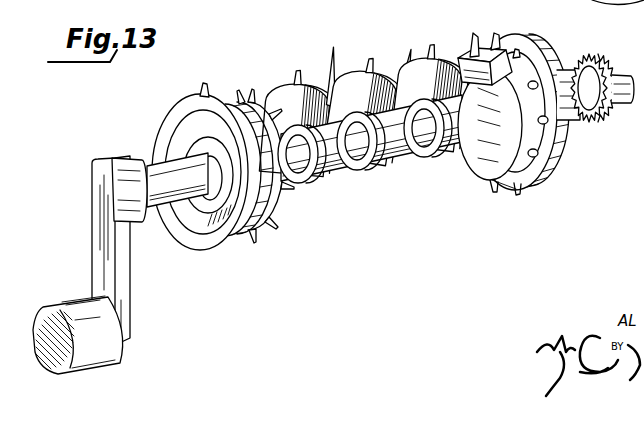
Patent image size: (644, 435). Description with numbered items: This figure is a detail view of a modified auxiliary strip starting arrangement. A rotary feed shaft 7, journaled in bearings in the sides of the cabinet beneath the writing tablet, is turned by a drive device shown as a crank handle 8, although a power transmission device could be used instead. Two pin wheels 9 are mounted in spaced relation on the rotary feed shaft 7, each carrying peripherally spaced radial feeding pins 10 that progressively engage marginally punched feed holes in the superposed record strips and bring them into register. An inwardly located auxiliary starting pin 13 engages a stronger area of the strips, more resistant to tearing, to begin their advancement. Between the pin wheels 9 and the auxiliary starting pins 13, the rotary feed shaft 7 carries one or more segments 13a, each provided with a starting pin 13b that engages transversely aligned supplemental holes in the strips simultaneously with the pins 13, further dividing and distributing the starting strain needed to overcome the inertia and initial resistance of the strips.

The rotary feed shaft 7 is at (332, 167).
The crank handle 8 is at (127, 277).
The pin wheel 9 is at (245, 237).
The feeding pin 10 is at (260, 243).
The auxiliary starting pin 13 is at (247, 78).
The segment 13a is at (323, 52).
The starting pin 13b is at (292, 70).